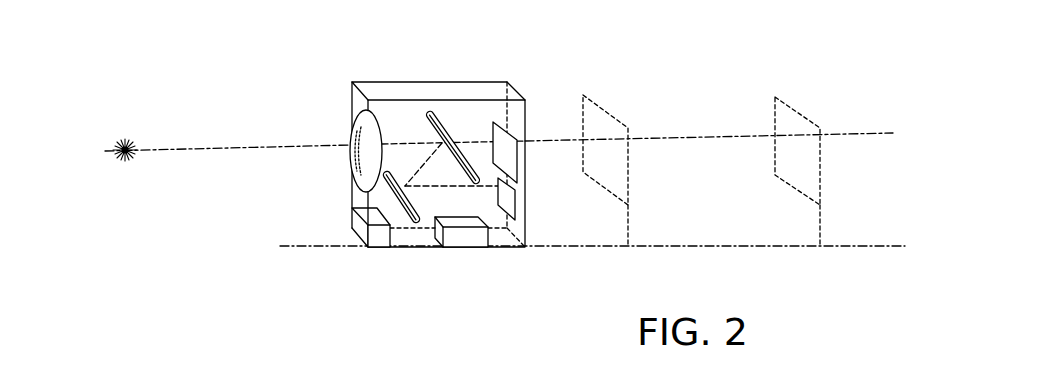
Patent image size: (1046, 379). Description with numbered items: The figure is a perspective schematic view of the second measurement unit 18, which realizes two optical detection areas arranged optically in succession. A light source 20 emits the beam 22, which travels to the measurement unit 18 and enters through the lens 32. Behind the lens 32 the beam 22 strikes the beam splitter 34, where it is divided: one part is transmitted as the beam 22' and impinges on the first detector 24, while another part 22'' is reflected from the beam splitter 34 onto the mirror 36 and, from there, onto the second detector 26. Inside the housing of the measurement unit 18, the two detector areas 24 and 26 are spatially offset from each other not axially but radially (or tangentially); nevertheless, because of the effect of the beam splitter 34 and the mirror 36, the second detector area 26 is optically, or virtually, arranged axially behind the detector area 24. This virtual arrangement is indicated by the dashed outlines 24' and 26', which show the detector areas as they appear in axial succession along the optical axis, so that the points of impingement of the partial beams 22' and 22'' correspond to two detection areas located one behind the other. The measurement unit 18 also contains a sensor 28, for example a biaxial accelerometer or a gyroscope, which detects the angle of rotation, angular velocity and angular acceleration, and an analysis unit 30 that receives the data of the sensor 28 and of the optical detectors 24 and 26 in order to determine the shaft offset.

The second measurement unit 18 is at (401, 88).
The light source 20 is at (125, 141).
The beam 22 is at (227, 106).
The transmitted beam 22' is at (637, 99).
The reflected beam part 22'' is at (452, 253).
The first detector 24 is at (522, 97).
The virtual image of first detector 24' is at (609, 129).
The second detector 26 is at (528, 249).
The virtual image of second detector 26' is at (794, 129).
The sensor 28 is at (362, 228).
The analysis unit 30 is at (472, 236).
The lens 32 is at (350, 140).
The beam splitter 34 is at (447, 137).
The mirror 36 is at (404, 217).